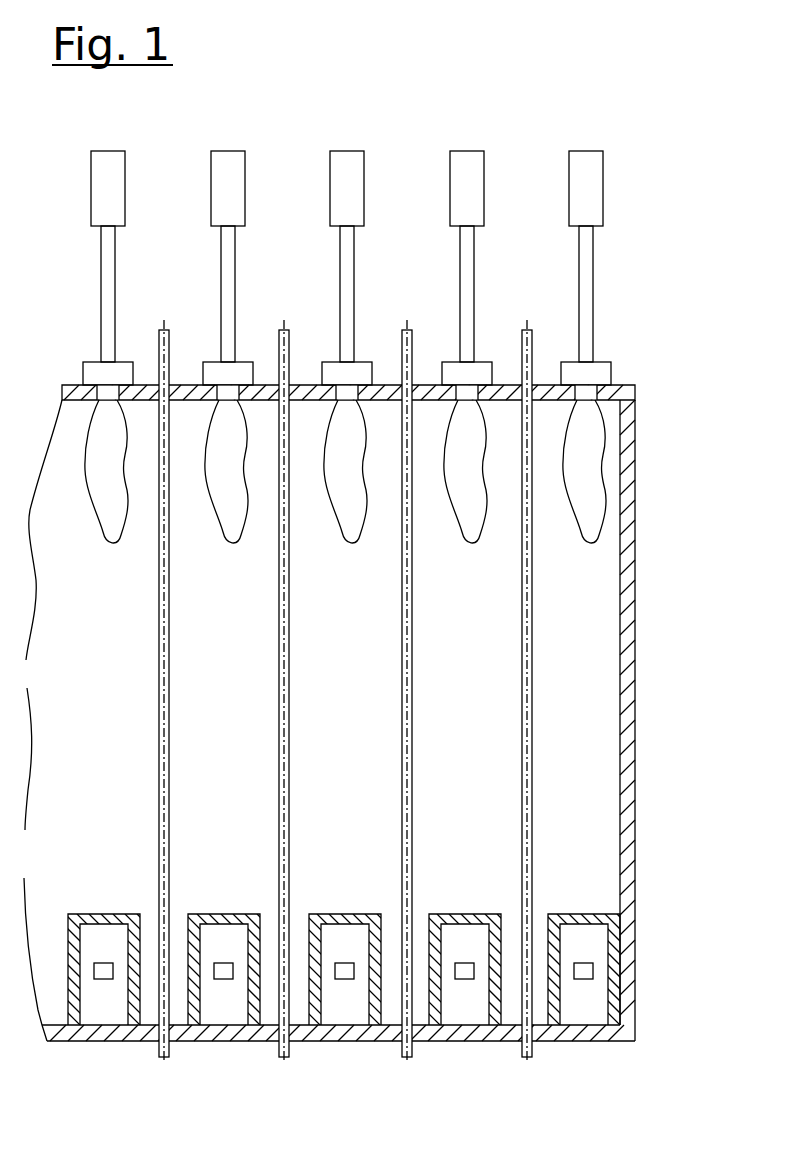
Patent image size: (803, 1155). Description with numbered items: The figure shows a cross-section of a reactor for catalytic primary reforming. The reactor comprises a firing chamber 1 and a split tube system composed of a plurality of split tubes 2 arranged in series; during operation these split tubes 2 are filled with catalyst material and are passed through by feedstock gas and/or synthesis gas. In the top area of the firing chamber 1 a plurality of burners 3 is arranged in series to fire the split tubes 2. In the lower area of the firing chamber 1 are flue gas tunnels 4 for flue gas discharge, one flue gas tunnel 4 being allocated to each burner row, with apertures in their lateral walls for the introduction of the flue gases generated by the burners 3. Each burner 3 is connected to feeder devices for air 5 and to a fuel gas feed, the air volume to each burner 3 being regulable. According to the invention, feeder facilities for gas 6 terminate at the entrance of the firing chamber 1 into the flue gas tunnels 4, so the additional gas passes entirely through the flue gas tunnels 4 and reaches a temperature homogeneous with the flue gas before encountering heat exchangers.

The firing chamber 1 is at (652, 470).
The split tubes 2 is at (297, 763).
The burners 3 is at (365, 355).
The flue gas tunnels 4 is at (318, 907).
The feeder devices for air 5 is at (368, 202).
The feeder facilities for gas 6 is at (462, 960).